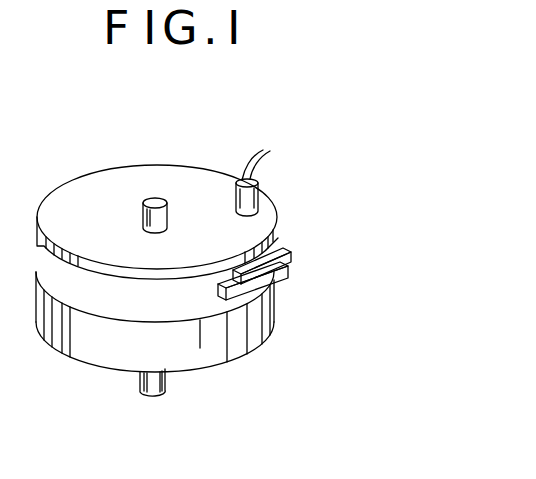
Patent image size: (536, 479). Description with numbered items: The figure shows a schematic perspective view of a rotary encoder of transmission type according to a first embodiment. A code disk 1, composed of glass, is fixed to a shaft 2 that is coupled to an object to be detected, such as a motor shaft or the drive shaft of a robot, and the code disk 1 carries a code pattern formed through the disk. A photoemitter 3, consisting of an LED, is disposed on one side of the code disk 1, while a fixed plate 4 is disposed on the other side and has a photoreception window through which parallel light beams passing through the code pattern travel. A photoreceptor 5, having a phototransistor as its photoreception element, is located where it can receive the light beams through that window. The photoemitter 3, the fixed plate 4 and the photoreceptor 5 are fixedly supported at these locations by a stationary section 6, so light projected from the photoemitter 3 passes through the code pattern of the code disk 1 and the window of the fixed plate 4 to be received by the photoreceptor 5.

The code disk 1 is at (181, 193).
The shaft 2 is at (168, 385).
The photoemitter 3 is at (259, 192).
The fixed plate 4 is at (292, 249).
The photoreceptor 5 is at (292, 270).
The stationary section 6 is at (268, 336).